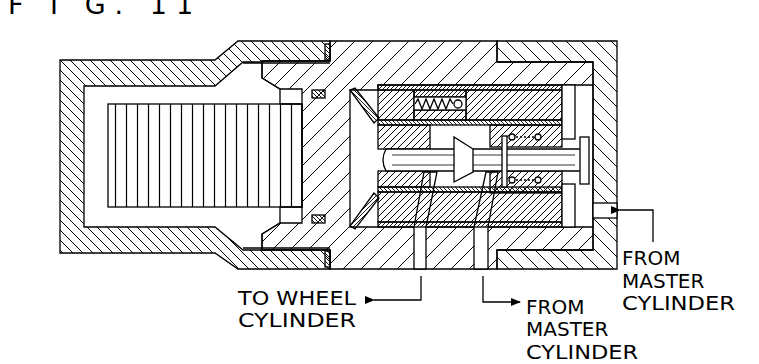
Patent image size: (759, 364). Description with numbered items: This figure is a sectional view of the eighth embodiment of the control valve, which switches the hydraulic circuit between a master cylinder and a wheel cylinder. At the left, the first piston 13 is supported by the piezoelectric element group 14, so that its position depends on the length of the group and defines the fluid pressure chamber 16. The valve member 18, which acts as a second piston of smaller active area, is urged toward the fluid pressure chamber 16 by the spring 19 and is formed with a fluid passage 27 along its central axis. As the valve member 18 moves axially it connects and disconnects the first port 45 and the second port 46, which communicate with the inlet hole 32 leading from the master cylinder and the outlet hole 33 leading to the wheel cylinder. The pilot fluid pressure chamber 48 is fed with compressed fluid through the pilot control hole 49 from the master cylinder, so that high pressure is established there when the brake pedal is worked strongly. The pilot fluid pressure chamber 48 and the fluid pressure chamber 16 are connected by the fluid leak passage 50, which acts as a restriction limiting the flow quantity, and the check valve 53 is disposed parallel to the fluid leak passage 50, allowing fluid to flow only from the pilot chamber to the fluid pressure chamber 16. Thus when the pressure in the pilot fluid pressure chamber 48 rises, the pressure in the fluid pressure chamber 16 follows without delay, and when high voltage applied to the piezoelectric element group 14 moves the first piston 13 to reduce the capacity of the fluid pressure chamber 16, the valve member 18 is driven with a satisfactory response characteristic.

The first piston 13 is at (305, 100).
The piezoelectric element group 14 is at (155, 200).
The fluid pressure chamber 16 is at (358, 118).
The valve member 18 is at (413, 152).
The spring 19 is at (583, 127).
The fluid passage 27 is at (467, 103).
The inlet hole 32 is at (481, 252).
The outlet hole 33 is at (421, 257).
The first port 45 is at (501, 289).
The second port 46 is at (397, 289).
The pilot fluid pressure chamber 48 is at (594, 94).
The pilot control hole 49 is at (617, 203).
The fluid leak passage 50 is at (393, 98).
The check valve 53 is at (446, 118).